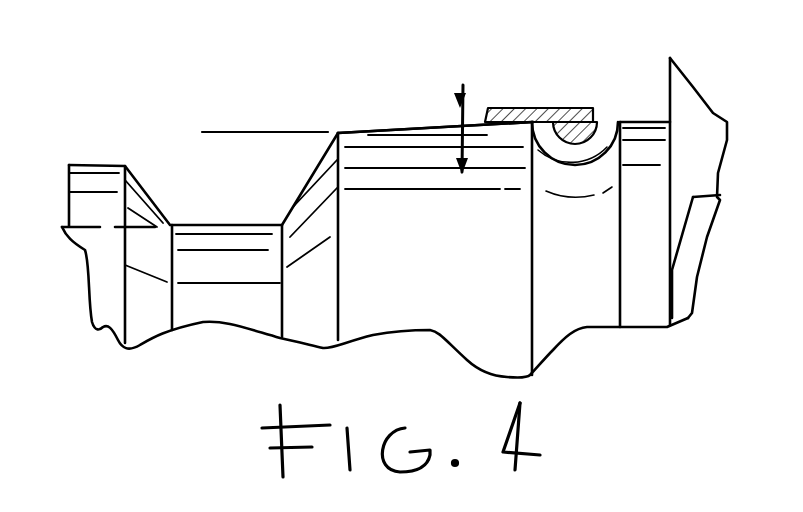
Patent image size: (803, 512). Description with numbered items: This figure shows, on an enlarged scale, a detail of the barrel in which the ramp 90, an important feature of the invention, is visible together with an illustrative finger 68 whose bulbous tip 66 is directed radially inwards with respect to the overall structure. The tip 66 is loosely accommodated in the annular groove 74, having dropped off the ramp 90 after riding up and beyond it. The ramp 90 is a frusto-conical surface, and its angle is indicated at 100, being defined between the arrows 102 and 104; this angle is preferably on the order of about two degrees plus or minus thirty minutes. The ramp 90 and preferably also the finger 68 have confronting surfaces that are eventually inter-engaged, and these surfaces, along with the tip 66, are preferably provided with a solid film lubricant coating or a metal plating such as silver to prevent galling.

The bulbous tip 66 is at (572, 138).
The finger 68 is at (545, 77).
The annular groove 74 is at (574, 172).
The ramp 90 is at (410, 127).
The angle of the ramp 100 is at (455, 135).
The arrow 102 is at (455, 110).
The arrow 104 is at (462, 163).